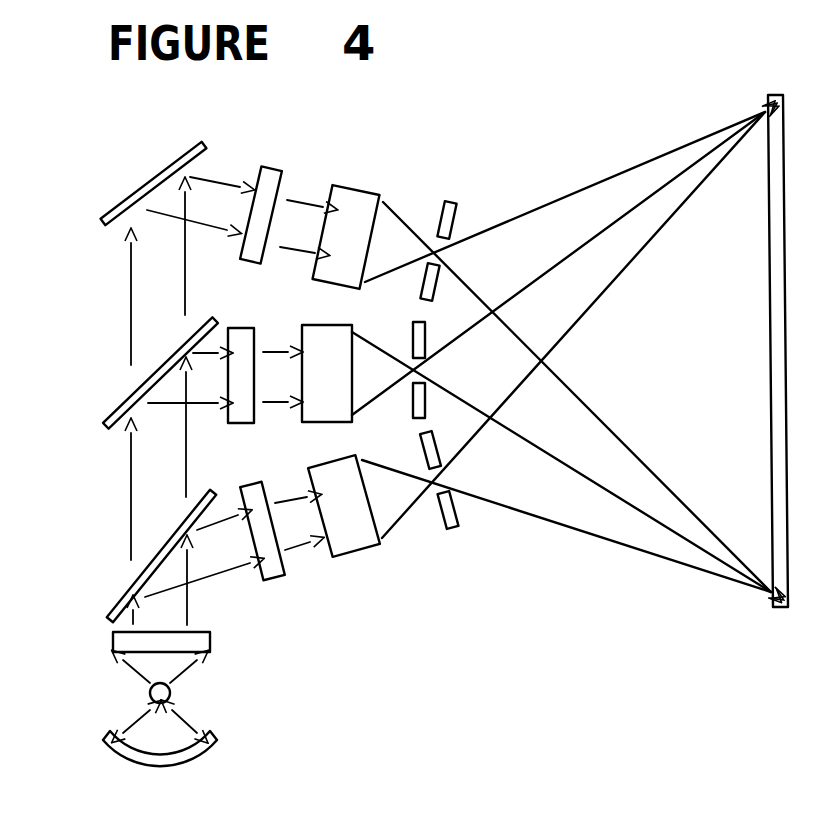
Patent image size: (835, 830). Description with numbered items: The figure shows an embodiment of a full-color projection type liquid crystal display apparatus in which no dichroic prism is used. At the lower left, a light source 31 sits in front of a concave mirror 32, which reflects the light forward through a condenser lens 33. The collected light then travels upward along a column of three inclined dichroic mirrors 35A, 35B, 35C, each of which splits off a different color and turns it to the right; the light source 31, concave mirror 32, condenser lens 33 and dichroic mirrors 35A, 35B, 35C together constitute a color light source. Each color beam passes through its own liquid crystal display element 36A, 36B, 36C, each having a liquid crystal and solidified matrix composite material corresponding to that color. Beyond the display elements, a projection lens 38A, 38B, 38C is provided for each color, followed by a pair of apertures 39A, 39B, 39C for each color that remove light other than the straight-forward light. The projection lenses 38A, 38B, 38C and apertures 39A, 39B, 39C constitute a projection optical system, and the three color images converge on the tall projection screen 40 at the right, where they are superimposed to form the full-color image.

The light source 31 is at (170, 693).
The concave mirror 32 is at (200, 743).
The condenser lens 33 is at (112, 645).
The dichroic mirror 35A is at (157, 175).
The dichroic mirror 35B is at (102, 430).
The dichroic mirror 35C is at (108, 622).
The liquid crystal display element 36A is at (268, 168).
The liquid crystal display element 36B is at (238, 423).
The liquid crystal display element 36C is at (273, 578).
The projection lens 38A is at (362, 190).
The projection lens 38B is at (303, 420).
The projection lens 38C is at (350, 557).
The aperture 39A is at (447, 203).
The aperture 39B is at (413, 412).
The aperture 39C is at (453, 528).
The projection screen 40 is at (770, 603).